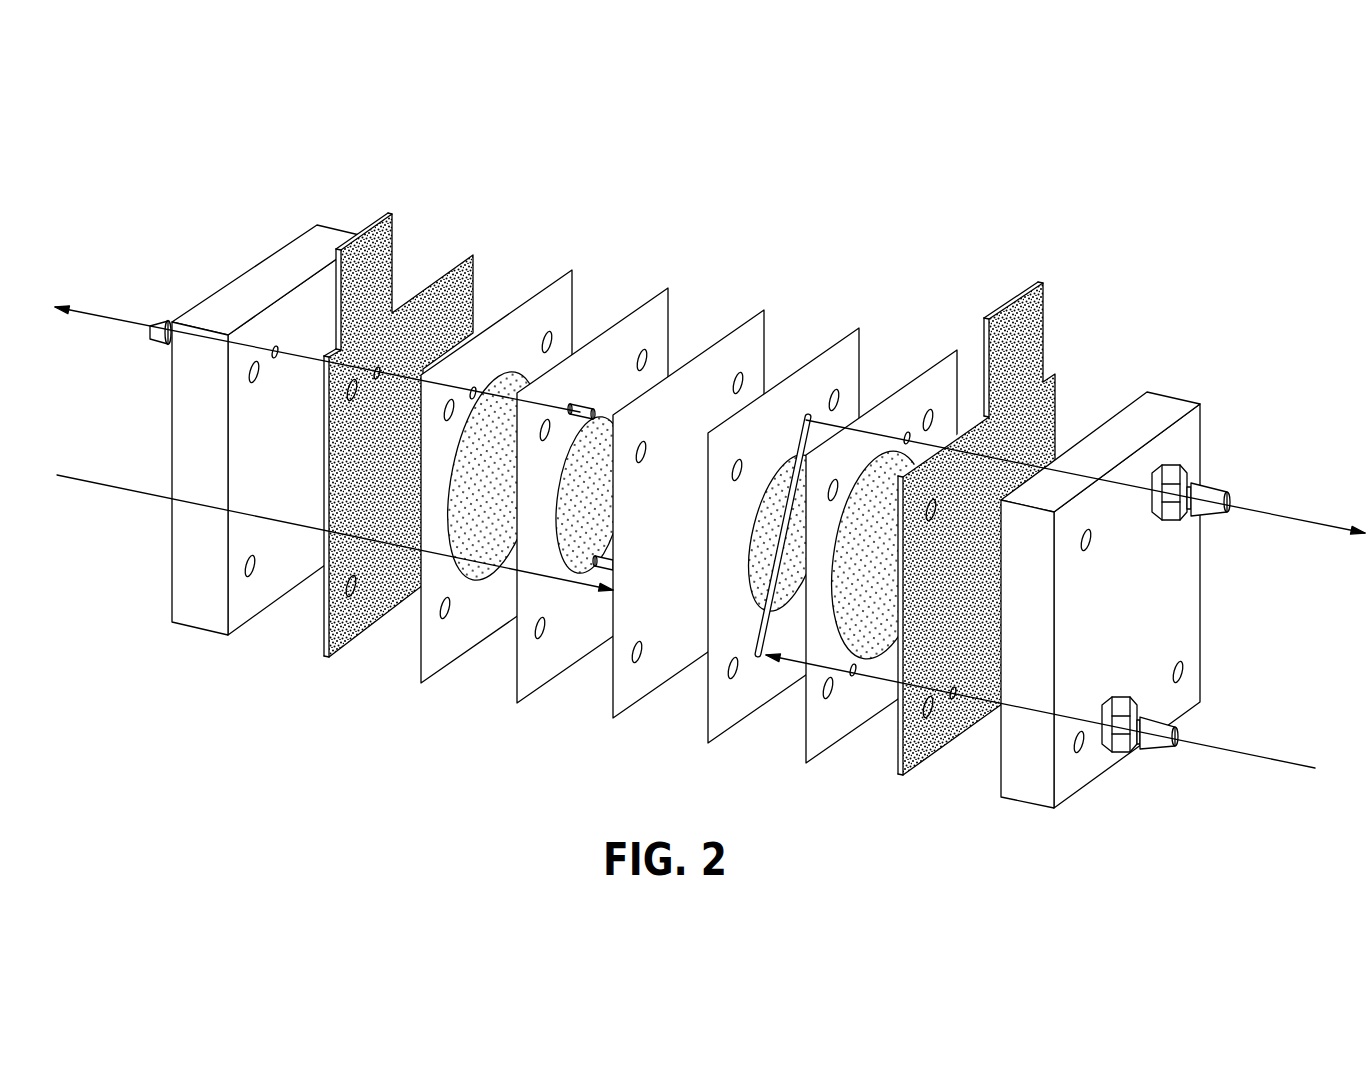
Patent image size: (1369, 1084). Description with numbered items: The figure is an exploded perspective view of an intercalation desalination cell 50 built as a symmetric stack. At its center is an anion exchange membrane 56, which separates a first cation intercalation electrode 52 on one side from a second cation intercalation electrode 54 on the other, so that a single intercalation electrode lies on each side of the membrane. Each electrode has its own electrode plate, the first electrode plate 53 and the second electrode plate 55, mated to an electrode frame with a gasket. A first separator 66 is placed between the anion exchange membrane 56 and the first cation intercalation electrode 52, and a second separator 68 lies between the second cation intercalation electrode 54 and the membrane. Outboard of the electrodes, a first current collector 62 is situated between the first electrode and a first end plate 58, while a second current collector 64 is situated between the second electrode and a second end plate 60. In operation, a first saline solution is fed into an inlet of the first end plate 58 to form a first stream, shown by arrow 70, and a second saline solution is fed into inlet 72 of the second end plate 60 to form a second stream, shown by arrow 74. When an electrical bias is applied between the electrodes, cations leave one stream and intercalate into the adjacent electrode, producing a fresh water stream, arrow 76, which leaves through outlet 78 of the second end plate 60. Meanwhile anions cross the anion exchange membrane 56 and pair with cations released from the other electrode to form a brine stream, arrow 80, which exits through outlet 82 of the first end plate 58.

The intercalation desalination (IDI) cell 50 is at (702, 482).
The first cation intercalation electrode 52 is at (496, 459).
The first electrode plate 53 is at (480, 580).
The second cation intercalation electrode 54 is at (881, 539).
The second electrode plate 55 is at (867, 662).
The anion exchange membrane 56 is at (740, 325).
The first end plate 58 is at (325, 242).
The second end plate 60 is at (1158, 412).
The first current collector 62 is at (387, 213).
The second current collector 64 is at (1040, 283).
The first separator 66 is at (643, 302).
The second separator 68 is at (833, 343).
The arrow depicting first stream 70 is at (100, 485).
The inlet of second end plate 72 is at (1158, 755).
The arrow depicting second stream 74 is at (1266, 761).
The arrow depicting fresh water stream 76 is at (1308, 519).
The outlet of second end plate 78 is at (1219, 488).
The arrow depicting brine stream 80 is at (92, 317).
The outlet of first end plate 82 is at (168, 322).